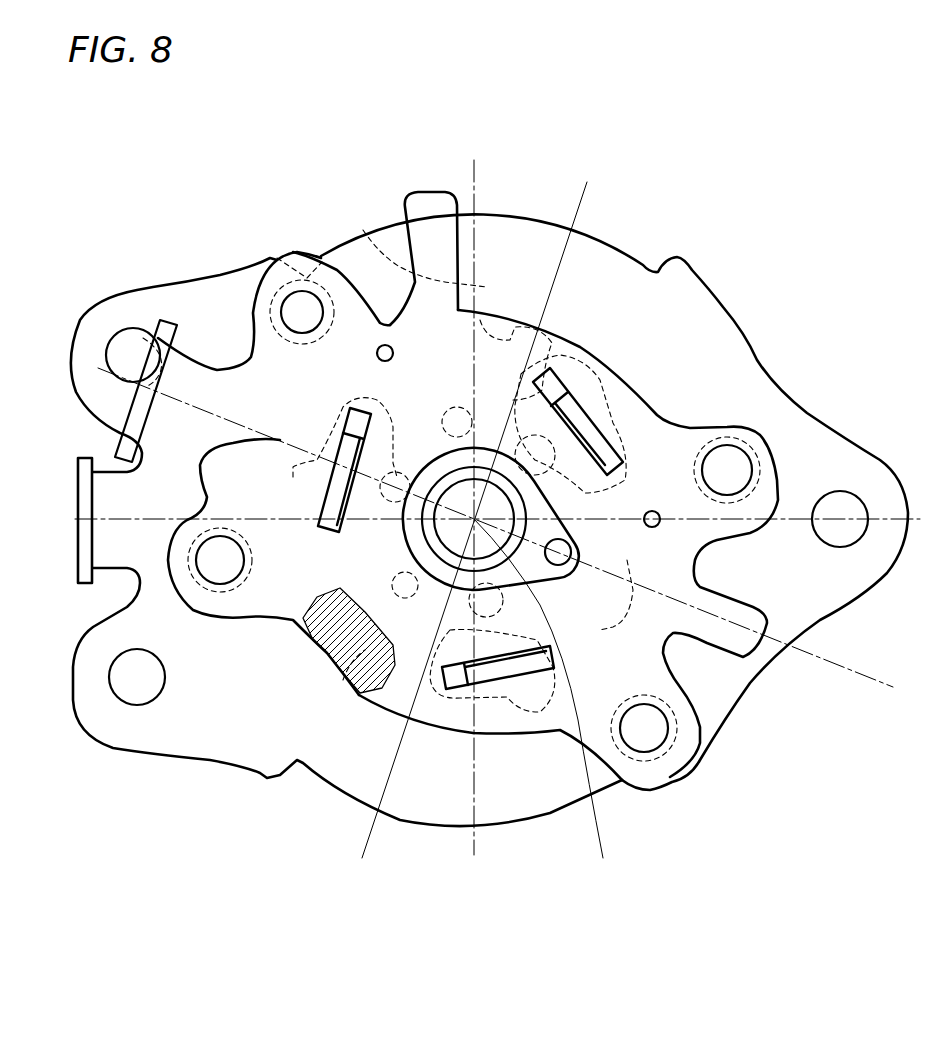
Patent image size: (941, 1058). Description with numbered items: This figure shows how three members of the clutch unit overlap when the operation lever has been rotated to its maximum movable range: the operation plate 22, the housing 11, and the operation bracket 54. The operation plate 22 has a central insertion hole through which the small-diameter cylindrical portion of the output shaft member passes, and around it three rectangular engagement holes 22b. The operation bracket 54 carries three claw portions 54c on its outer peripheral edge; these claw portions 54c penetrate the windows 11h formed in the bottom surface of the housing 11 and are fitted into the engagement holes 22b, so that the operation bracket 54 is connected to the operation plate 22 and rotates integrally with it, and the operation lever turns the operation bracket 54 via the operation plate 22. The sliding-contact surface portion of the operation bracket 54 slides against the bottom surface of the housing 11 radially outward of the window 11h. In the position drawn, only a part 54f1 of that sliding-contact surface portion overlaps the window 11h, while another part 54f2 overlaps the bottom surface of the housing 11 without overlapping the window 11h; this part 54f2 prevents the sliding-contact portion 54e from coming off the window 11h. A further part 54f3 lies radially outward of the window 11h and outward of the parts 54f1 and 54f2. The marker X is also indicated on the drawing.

The housing 11 is at (853, 437).
The window 11h is at (363, 230).
The operation plate 22 is at (660, 410).
The engagement hole 22b is at (567, 528).
The operation bracket 54 is at (523, 383).
The claw portion 54c is at (612, 418).
The sliding-contact portion 54e is at (700, 535).
The part of the sliding-contact surface portion 54f1 is at (343, 680).
The part of the sliding-contact surface portion 54f2 is at (420, 700).
The part of the sliding-contact surface portion 54f3 is at (313, 637).
The axis X is at (554, 720).